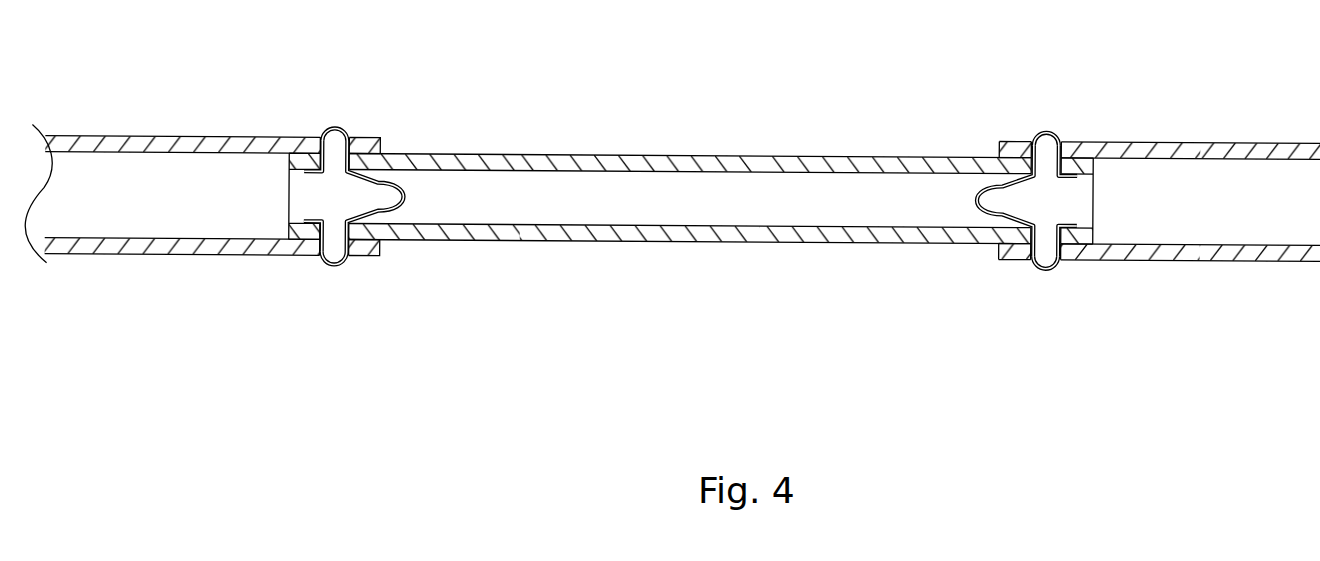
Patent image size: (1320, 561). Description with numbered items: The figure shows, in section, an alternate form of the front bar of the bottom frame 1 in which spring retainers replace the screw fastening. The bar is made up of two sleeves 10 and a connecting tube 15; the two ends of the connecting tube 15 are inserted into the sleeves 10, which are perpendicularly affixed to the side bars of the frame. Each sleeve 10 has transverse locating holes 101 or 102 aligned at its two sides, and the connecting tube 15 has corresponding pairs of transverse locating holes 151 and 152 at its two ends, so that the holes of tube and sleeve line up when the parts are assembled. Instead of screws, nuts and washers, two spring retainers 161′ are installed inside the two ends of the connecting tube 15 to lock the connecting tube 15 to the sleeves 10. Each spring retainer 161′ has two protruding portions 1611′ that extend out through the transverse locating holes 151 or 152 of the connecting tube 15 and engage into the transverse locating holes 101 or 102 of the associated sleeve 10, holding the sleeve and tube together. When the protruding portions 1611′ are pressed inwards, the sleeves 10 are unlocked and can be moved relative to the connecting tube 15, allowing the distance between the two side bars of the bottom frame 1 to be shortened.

The bottom frame 1 is at (672, 197).
The sleeve 10 is at (212, 137).
The connecting tube 15 is at (680, 155).
The transverse locating hole 101 is at (373, 143).
The transverse locating hole 102 is at (1062, 155).
The transverse locating hole 151 is at (381, 157).
The transverse locating hole 152 is at (1090, 165).
The spring retainer 161′ is at (684, 189).
The protruding portion 1611′ is at (350, 128).